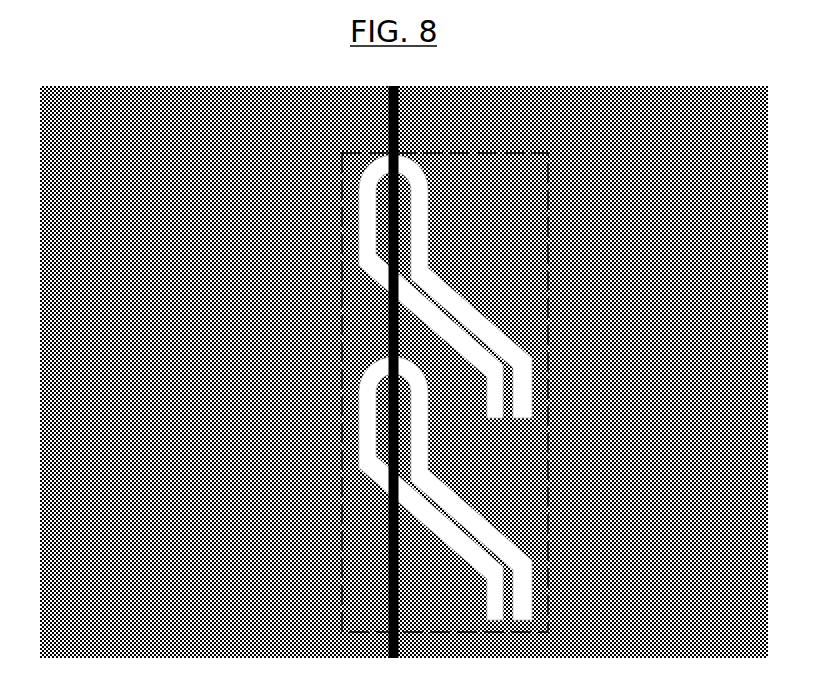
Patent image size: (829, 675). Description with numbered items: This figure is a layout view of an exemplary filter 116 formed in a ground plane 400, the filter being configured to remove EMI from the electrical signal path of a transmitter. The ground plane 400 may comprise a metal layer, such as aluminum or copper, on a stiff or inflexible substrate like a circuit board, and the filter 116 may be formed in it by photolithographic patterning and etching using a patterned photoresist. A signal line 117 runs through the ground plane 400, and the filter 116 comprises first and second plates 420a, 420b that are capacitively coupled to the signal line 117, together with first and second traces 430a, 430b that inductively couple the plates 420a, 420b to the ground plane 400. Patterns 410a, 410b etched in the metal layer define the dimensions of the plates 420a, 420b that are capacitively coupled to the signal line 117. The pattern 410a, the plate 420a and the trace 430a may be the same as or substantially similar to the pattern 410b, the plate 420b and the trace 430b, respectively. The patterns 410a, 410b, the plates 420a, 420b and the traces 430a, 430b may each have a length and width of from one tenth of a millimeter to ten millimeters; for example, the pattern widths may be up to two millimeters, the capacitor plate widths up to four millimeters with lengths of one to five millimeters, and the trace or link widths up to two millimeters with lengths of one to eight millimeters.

The ground plane 400 is at (664, 370).
The filter 116 is at (358, 152).
The signal line 117 is at (388, 331).
The pattern 410a is at (372, 256).
The pattern 410b is at (391, 488).
The first plate 420a is at (408, 199).
The second plate 420b is at (472, 428).
The first trace 430a is at (485, 358).
The second trace 430b is at (511, 557).